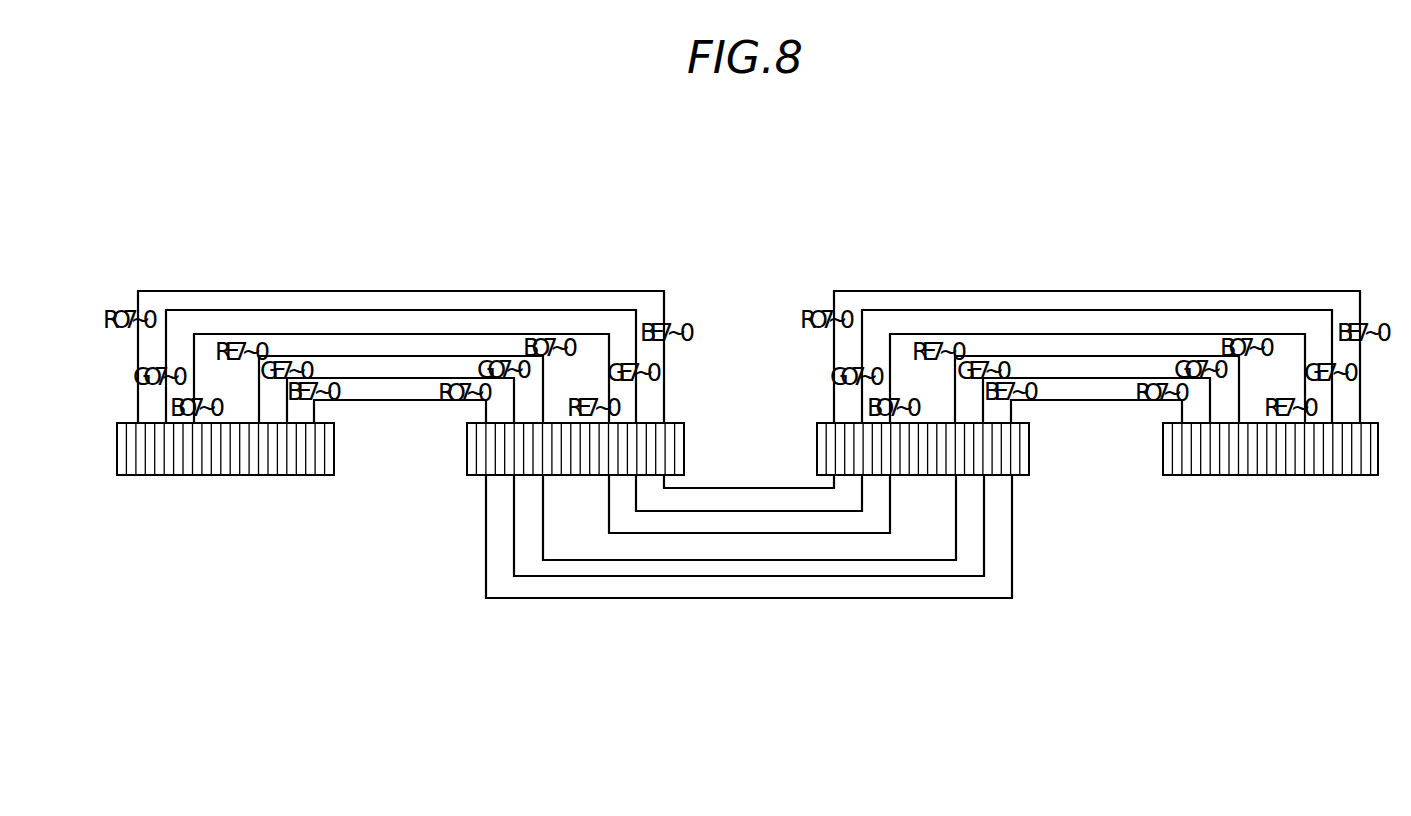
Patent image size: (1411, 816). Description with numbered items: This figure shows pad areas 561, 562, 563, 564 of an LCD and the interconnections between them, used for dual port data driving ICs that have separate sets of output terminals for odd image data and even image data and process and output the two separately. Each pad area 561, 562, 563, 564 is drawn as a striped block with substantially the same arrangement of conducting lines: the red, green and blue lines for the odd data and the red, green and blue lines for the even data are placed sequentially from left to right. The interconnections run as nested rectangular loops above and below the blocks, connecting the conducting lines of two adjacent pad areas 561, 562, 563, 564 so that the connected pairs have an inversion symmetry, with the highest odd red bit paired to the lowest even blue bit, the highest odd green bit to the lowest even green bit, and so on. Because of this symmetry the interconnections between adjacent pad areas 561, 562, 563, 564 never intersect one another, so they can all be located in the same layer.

The pad area 561 is at (225, 478).
The pad area 562 is at (612, 439).
The pad area 563 is at (959, 453).
The pad area 564 is at (1270, 480).